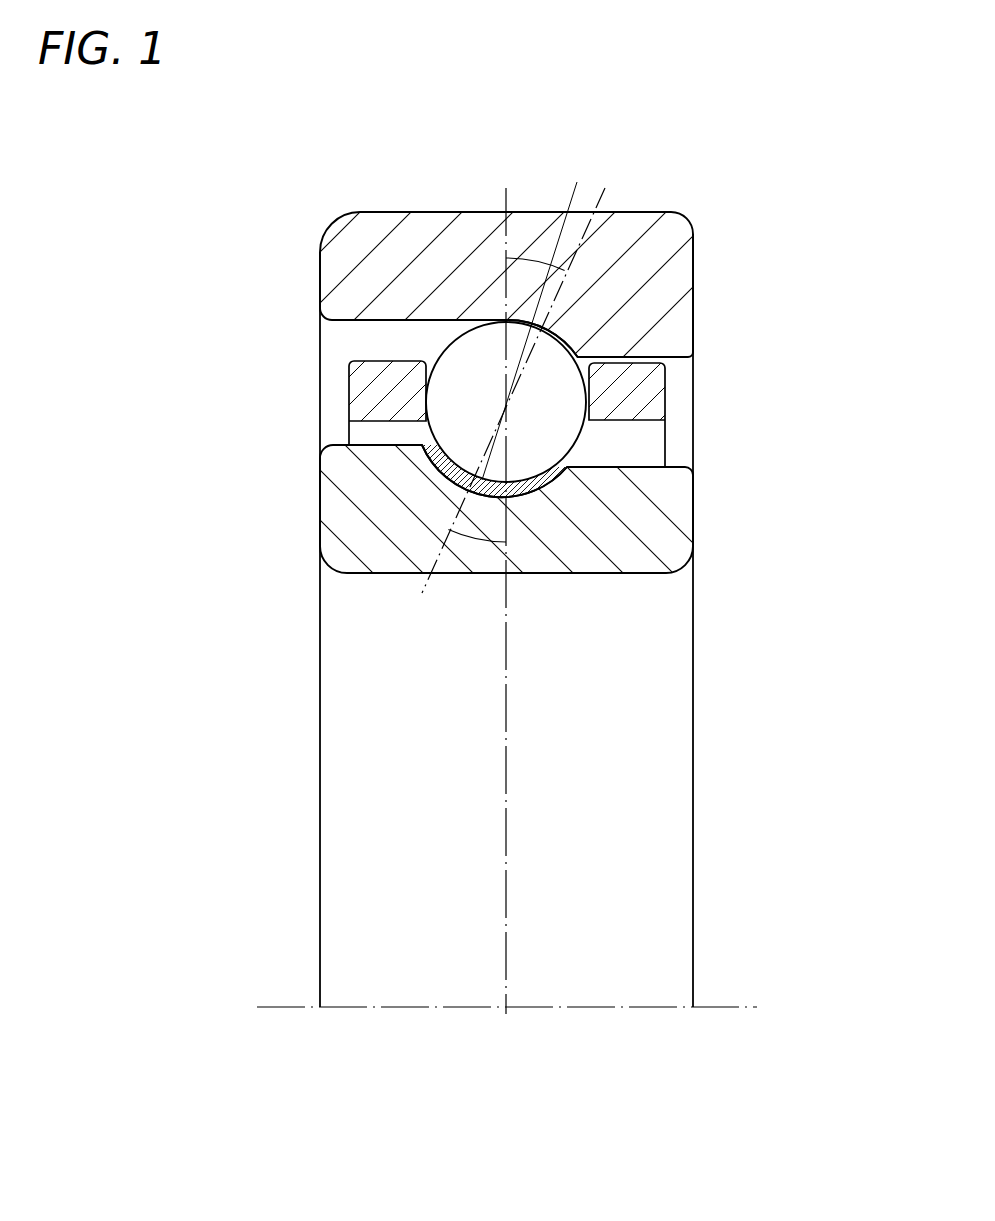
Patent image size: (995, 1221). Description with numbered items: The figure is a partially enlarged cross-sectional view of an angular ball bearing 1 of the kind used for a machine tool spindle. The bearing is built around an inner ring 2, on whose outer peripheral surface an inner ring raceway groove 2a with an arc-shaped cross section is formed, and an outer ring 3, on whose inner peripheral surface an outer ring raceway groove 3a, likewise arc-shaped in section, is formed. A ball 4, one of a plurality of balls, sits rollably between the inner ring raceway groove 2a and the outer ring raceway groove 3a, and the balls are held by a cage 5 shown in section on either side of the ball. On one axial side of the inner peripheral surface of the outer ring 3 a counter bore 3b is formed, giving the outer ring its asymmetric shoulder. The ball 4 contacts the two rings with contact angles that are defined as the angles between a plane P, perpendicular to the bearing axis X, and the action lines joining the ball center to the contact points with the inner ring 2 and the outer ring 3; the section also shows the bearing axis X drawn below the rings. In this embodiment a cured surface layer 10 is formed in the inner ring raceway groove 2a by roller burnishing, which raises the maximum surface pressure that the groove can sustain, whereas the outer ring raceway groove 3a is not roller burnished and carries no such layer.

The angular ball bearing 1 is at (669, 157).
The inner ring 2 is at (673, 532).
The inner ring raceway groove 2a is at (520, 473).
The outer ring 3 is at (672, 277).
The outer ring raceway groove 3a is at (528, 322).
The counter bore 3b is at (417, 318).
The ball 4 is at (558, 428).
The cage 5 is at (650, 387).
The cured surface layer 10 is at (577, 495).
The plane perpendicular to the bearing axis P is at (498, 205).
The bearing axis X is at (747, 1010).